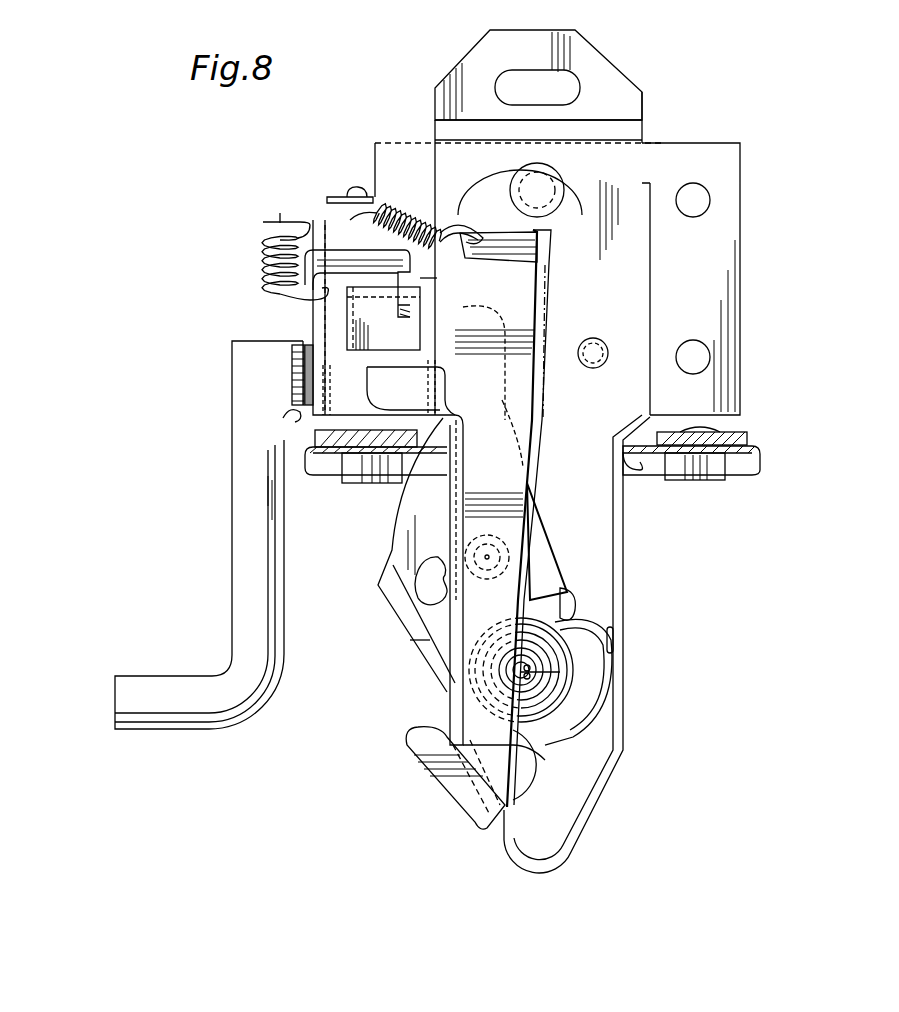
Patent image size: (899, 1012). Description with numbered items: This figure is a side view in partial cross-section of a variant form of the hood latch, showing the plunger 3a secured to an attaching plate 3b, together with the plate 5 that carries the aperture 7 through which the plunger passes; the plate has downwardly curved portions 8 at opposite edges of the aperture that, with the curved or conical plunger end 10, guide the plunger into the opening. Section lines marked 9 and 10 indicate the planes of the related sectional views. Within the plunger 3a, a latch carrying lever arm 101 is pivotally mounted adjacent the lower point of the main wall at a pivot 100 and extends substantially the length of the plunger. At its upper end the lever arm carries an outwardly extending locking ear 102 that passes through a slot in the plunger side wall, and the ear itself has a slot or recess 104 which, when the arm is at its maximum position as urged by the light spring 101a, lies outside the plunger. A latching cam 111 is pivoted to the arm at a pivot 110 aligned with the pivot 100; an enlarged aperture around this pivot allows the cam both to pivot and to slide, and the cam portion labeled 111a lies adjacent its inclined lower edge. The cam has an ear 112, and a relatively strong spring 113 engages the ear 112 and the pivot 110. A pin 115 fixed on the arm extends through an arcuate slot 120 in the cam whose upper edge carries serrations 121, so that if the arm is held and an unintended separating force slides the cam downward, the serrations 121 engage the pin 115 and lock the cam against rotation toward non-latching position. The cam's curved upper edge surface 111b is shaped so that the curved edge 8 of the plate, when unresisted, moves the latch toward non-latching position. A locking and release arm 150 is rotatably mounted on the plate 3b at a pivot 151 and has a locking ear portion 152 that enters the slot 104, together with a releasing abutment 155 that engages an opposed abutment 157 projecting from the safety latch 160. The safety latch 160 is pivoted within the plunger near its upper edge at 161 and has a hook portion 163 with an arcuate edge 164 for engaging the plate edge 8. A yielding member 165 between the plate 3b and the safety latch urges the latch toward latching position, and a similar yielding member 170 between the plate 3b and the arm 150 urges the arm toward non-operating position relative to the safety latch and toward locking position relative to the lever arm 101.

The plunger 3a is at (624, 737).
The attaching plate 3b is at (713, 247).
The plate 5 is at (760, 452).
The aperture 7 is at (640, 420).
The downwardly curved portions 8 is at (635, 478).
The section line 9- 9 is at (500, 920).
The plunger end 10 is at (785, 640).
The pivot 100 is at (532, 767).
The latch carrying lever arm 101 is at (560, 560).
The light spring 101a is at (612, 713).
The locking ear 102 is at (353, 317).
The slot or recess 104 is at (437, 278).
The pivot 110 is at (565, 640).
The latching cam 111 is at (413, 527).
The pawl lower arm 111a is at (415, 640).
The curved upper edge surface 111b is at (407, 513).
The ear 112 is at (570, 600).
The spring 113 is at (568, 675).
The pin 115 is at (543, 522).
The arcuate slot 120 is at (420, 597).
The serrations 121 is at (460, 553).
The locking and release arm 150 is at (237, 512).
The pivot 151 is at (293, 380).
The locking ear portion 152 is at (387, 280).
The releasing abutment 155 is at (410, 317).
The abutment 157 is at (340, 373).
The safety latch 160 is at (527, 310).
The pivot 161 is at (525, 248).
The hook portion 163 is at (443, 783).
The arcuate edge 164 is at (423, 773).
The yielding member 165 is at (400, 205).
The yielding member 170 is at (262, 258).